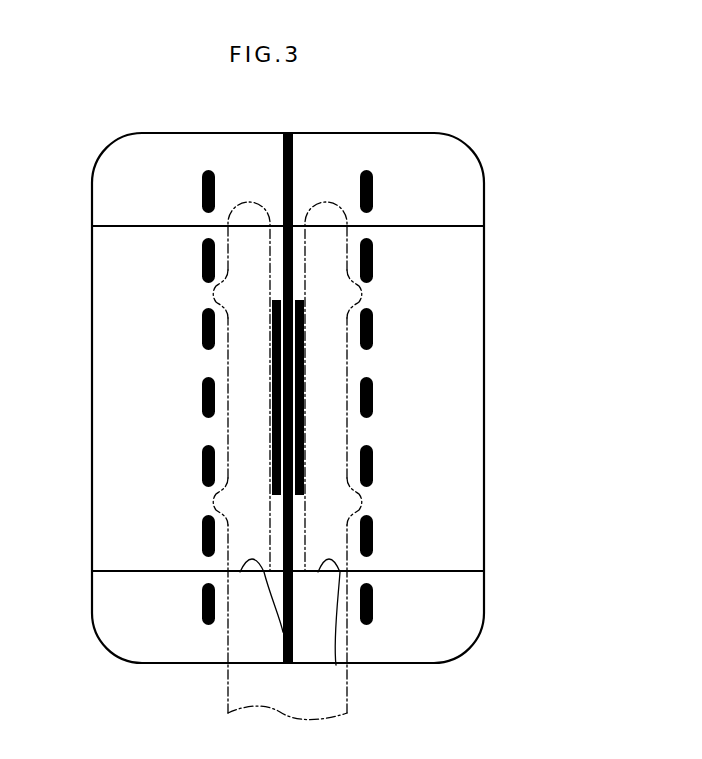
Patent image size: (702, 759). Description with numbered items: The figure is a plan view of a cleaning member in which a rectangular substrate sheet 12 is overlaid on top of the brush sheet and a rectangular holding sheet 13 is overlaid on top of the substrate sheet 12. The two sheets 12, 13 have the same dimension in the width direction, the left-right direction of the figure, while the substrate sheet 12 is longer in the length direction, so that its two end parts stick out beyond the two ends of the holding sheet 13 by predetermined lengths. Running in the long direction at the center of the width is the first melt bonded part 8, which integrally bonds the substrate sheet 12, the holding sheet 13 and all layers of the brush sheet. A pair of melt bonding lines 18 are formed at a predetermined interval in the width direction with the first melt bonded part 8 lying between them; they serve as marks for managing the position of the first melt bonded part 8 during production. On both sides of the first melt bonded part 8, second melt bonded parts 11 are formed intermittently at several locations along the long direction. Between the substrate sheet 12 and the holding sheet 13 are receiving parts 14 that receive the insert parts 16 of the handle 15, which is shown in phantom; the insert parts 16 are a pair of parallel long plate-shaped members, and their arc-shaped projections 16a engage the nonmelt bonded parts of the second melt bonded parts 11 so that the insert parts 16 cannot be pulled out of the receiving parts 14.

The first melt bonded part 8 is at (292, 168).
The second melt bonded parts 11 is at (202, 270).
The substrate sheet 12 is at (460, 204).
The holding sheet 13 is at (463, 553).
The receiving parts 14 is at (292, 648).
The handle 15 is at (243, 692).
The insert parts 16 is at (243, 421).
The arc-shaped projections 16a is at (362, 298).
The melt bonding lines 18 is at (272, 442).